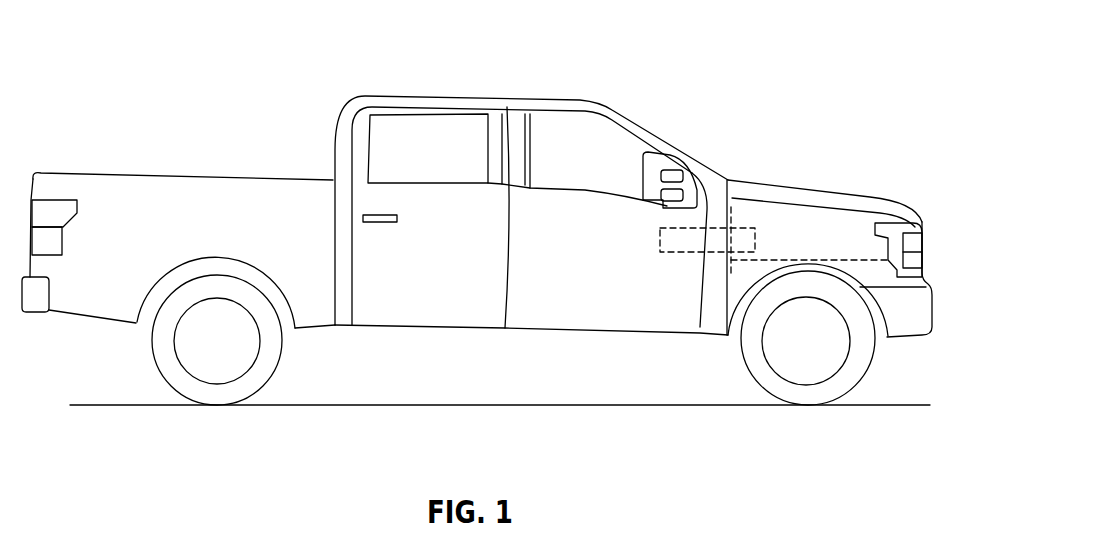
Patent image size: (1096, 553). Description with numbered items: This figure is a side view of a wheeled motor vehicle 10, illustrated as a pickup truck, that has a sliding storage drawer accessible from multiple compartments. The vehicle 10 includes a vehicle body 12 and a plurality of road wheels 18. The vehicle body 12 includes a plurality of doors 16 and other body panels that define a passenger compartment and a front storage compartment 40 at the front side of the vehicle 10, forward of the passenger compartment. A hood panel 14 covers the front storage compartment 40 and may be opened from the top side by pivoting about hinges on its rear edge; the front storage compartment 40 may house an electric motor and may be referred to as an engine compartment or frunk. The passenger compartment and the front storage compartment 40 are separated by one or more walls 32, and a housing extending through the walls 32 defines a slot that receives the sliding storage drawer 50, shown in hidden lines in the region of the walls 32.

The motor vehicle 10 is at (668, 55).
The vehicle body 12 is at (717, 307).
The hood panel 14 is at (875, 197).
The doors 16 is at (480, 283).
The road wheels 18 is at (273, 360).
The walls 32 is at (740, 213).
The front storage compartment 40 is at (803, 223).
The sliding storage drawer 50 is at (717, 228).